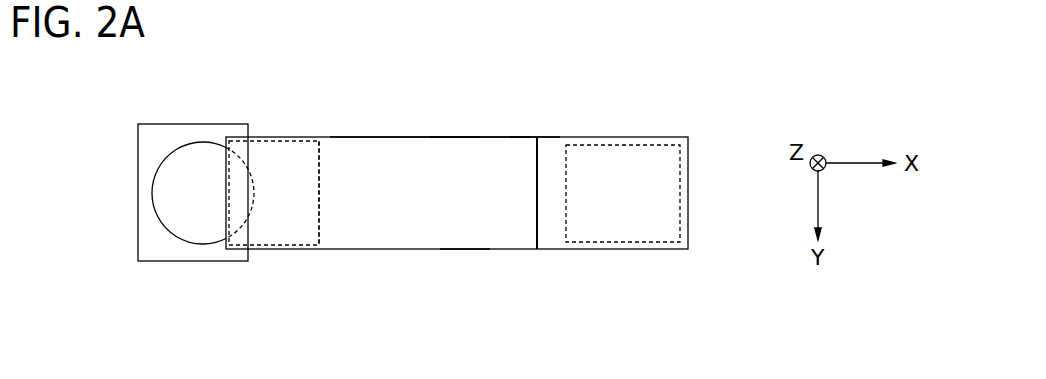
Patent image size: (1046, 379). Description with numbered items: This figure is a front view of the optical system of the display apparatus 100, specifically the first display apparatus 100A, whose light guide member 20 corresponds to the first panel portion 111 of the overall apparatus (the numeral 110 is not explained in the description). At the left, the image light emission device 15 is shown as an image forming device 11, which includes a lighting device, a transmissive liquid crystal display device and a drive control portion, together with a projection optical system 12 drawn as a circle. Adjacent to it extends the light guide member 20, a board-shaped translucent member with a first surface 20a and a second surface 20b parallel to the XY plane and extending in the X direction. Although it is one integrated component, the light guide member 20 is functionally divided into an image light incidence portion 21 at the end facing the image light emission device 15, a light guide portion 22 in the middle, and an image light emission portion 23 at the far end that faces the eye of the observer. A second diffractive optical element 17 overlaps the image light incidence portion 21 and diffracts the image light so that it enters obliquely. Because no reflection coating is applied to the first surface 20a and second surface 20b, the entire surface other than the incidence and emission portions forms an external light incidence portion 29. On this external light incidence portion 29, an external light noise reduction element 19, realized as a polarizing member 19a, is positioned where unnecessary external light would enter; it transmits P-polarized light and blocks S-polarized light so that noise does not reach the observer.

The display apparatus 100 is at (413, 191).
The first display apparatus 100A is at (285, 44).
The image forming device 11 is at (216, 262).
The projection optical system 12 is at (168, 228).
The image light emission device 15 is at (220, 325).
The second diffractive optical element 17 is at (313, 213).
The external light noise reduction element 19 is at (582, 221).
The polarizing member 19a is at (550, 227).
The light guide member 20 is at (457, 236).
The light guide 110 is at (457, 236).
The first panel portion 111 is at (379, 256).
The first surface 20a is at (452, 150).
The second surface 20b is at (463, 222).
The image light incidence portion 21 is at (290, 147).
The light guide portion 22 is at (380, 146).
The image light emission portion 23 is at (616, 156).
The external light incidence portion 29 is at (512, 150).